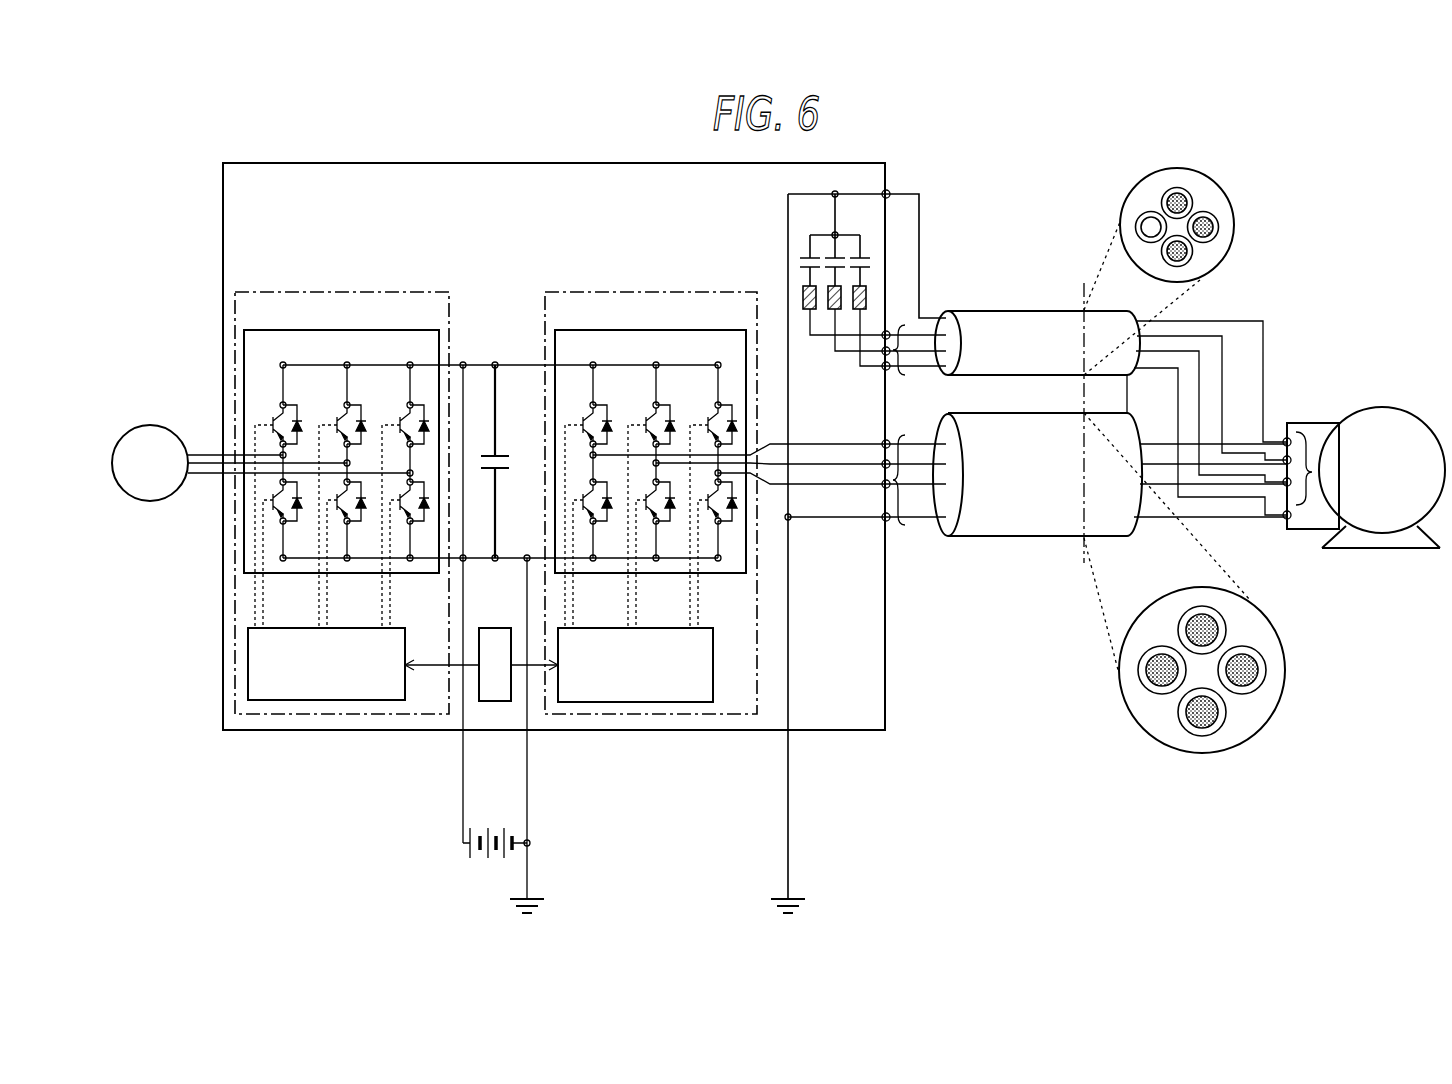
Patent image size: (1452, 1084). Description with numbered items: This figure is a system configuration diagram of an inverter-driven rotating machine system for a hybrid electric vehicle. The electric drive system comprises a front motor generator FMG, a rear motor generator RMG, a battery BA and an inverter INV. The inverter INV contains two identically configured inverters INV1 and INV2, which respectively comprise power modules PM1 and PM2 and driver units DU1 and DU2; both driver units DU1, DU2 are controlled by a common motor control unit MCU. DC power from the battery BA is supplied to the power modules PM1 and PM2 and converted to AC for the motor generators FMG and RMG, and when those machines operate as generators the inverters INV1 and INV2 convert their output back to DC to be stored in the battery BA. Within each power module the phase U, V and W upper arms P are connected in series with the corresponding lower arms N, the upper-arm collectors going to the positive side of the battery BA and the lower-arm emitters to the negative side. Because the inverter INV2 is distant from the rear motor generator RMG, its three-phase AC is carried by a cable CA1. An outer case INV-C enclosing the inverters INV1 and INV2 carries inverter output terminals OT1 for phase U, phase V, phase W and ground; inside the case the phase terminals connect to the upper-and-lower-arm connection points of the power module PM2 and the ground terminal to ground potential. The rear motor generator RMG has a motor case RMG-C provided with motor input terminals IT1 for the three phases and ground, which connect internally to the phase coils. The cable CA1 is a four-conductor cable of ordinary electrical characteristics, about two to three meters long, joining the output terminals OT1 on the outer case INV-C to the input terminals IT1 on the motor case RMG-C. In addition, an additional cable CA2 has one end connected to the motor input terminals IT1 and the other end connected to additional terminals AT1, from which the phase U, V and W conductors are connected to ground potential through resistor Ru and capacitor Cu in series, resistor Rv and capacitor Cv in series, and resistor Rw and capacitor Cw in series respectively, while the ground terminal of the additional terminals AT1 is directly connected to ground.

The inverter INV is at (554, 446).
The first inverter INV1 is at (342, 503).
The second inverter INV2 is at (651, 503).
The power module PM1 is at (341, 479).
The power module PM2 is at (650, 479).
The upper arms P is at (500, 588).
The lower arms N is at (500, 734).
The front motor generator FMG is at (261, 463).
The driver unit DU1 is at (326, 664).
The driver unit DU2 is at (635, 665).
The motor control unit MCU is at (481, 664).
The battery BA is at (493, 861).
The outer case INV-C is at (886, 680).
The capacitor Cu is at (805, 252).
The capacitor Cv is at (835, 248).
The capacitor Cw is at (868, 250).
The resistor Ru is at (803, 312).
The resistor Rv is at (828, 312).
The resistor Rw is at (860, 312).
The additional terminals AT1 is at (920, 345).
The inverter output terminals OT1 is at (920, 470).
The cable CA1 is at (1110, 474).
The additional cable CA2 is at (1111, 413).
The motor case RMG-C is at (1316, 423).
The motor input terminals IT1 is at (1318, 505).
The rear motor generator RMG is at (1382, 477).